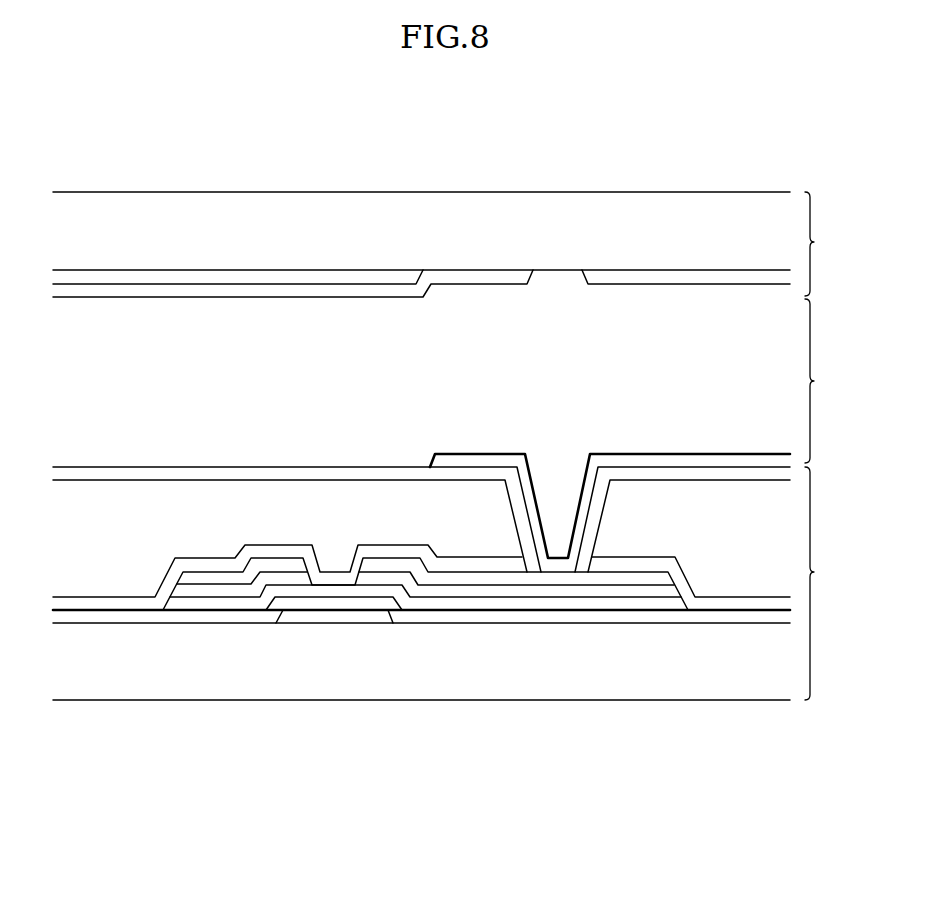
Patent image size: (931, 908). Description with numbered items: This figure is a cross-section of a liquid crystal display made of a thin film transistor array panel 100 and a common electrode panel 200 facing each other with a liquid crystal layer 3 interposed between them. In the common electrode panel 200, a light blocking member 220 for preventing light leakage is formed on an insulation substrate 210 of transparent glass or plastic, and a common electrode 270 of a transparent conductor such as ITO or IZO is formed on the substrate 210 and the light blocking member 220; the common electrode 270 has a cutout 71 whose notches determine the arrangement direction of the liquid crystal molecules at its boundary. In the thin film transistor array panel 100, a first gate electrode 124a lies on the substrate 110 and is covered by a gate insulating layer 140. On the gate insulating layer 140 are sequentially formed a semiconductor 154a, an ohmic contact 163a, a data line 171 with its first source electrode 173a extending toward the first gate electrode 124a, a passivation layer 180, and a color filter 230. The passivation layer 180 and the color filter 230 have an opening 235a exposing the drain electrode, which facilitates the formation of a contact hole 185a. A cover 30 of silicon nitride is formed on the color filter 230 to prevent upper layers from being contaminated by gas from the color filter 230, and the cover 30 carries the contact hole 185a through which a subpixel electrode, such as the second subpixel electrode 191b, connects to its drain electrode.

The common electrode panel 200 is at (832, 244).
The insulation substrate 210 is at (563, 215).
The light blocking member 220 is at (319, 277).
The common electrode 270 is at (201, 290).
The cutout 71 is at (580, 280).
The liquid crystal layer 3 is at (820, 381).
The thin film transistor array panel 100 is at (832, 583).
The cover 30 is at (327, 466).
The second subpixel electrode 191b is at (733, 454).
The contact hole 185a is at (584, 512).
The opening 235a is at (592, 495).
The passivation layer 180 is at (628, 600).
The data line 171 is at (195, 575).
The first source electrode 173a is at (285, 565).
The ohmic contact 163a is at (232, 590).
The semiconductor 154a is at (298, 590).
The gate insulating layer 140 is at (549, 620).
The first gate electrode 124a is at (338, 618).
The substrate 110 is at (485, 686).
The color filter 230 is at (108, 573).